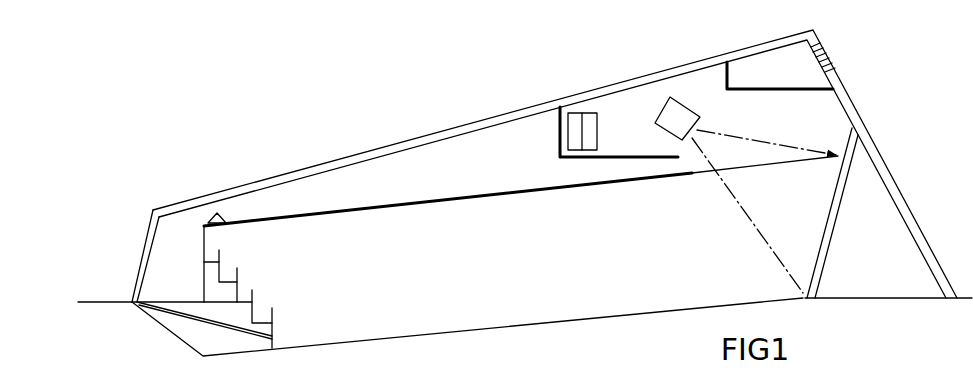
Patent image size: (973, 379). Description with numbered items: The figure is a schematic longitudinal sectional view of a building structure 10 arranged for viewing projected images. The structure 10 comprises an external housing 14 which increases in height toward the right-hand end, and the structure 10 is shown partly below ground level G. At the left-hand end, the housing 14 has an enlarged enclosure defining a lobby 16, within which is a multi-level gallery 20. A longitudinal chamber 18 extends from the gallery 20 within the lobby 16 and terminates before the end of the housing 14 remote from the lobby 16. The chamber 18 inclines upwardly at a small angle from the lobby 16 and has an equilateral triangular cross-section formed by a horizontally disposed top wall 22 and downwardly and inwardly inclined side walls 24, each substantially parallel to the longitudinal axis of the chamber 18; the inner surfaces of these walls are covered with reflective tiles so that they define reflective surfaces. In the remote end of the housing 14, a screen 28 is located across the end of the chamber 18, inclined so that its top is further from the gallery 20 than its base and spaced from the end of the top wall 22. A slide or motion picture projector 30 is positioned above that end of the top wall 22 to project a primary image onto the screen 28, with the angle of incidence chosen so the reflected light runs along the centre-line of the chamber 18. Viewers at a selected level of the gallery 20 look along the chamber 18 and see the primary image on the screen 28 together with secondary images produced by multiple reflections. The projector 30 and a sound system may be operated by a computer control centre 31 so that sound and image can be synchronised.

The structure 10 is at (487, 98).
The external housing 14 is at (640, 78).
The lobby 16 is at (165, 302).
The longitudinal chamber 18 is at (440, 222).
The multi-level gallery 20 is at (242, 285).
The top wall 22 is at (348, 212).
The side walls 24 is at (597, 275).
The screen 28 is at (831, 238).
The projector 30 is at (678, 114).
The computer control centre 31 is at (588, 123).
The ground level G is at (97, 302).